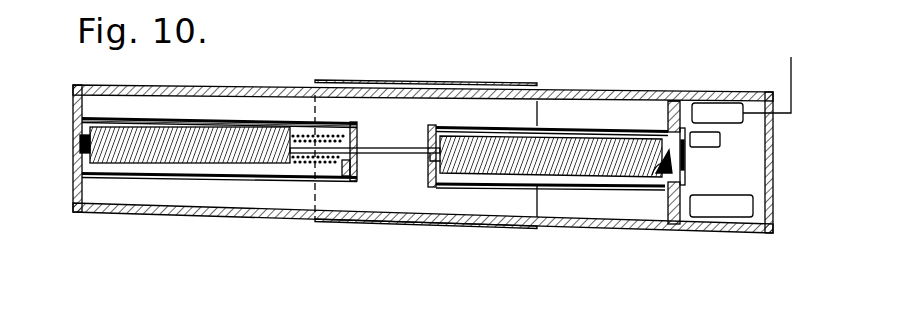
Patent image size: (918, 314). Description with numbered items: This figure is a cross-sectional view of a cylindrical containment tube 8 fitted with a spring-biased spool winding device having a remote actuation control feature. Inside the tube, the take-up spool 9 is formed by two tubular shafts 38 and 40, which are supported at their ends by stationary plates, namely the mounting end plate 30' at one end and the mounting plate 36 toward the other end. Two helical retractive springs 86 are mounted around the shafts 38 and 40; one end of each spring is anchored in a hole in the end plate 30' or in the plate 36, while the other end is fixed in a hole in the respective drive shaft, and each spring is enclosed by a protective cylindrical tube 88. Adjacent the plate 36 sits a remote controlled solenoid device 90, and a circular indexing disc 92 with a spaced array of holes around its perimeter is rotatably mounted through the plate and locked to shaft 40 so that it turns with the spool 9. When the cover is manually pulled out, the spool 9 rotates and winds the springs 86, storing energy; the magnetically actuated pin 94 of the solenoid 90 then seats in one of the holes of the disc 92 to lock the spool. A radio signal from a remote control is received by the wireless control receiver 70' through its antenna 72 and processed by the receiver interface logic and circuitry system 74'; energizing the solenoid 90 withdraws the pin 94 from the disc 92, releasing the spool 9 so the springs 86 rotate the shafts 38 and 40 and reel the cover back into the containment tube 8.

The containment tube 8 is at (497, 88).
The take-up spool 9 is at (170, 178).
The mounting end plate 30' is at (420, 159).
The end plate 36 is at (669, 207).
The tubular shaft 38 is at (340, 178).
The tubular shaft 40 is at (665, 182).
The wireless control receiver 70' is at (726, 93).
The receiver antenna 72 is at (792, 64).
The receiver/motor interface logic and circuitry system 74' is at (729, 228).
The helical spring 86 is at (245, 138).
The protective cylindrical tube 88 is at (280, 180).
The solenoid device 90 is at (722, 150).
The indexing disc 92 is at (686, 176).
The magnetically actuated pin 94 is at (691, 93).